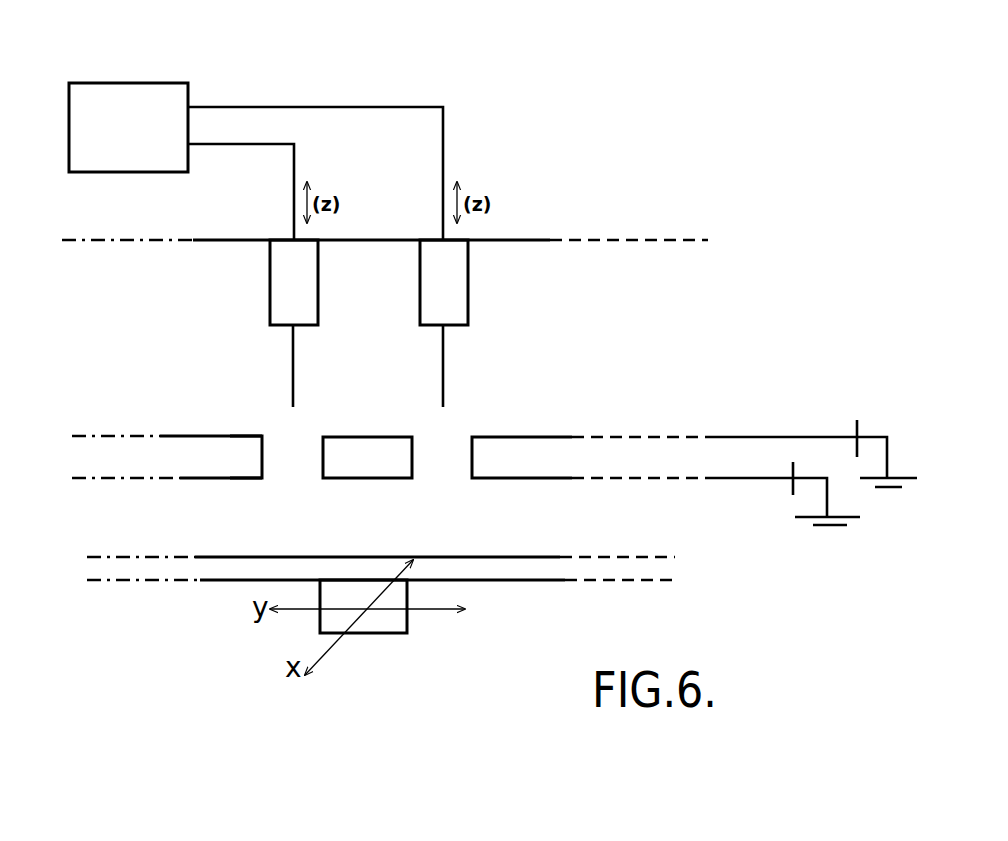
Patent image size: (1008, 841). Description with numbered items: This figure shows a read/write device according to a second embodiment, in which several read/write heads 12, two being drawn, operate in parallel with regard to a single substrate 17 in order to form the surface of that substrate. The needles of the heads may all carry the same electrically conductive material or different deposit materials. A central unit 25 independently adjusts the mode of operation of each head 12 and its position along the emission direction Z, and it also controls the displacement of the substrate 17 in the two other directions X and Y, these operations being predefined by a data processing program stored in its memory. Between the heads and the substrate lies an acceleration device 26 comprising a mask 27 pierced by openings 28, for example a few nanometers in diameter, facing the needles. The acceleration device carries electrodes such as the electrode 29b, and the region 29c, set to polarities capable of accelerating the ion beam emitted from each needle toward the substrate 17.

The central unit 25 is at (133, 117).
The read/write head 12 is at (257, 300).
The acceleration device 26 is at (107, 457).
The upper edge of bar 29c is at (235, 435).
The electrode 29b is at (232, 477).
The opening 28 is at (435, 455).
The mask 27 is at (498, 457).
The substrate 17 is at (240, 568).